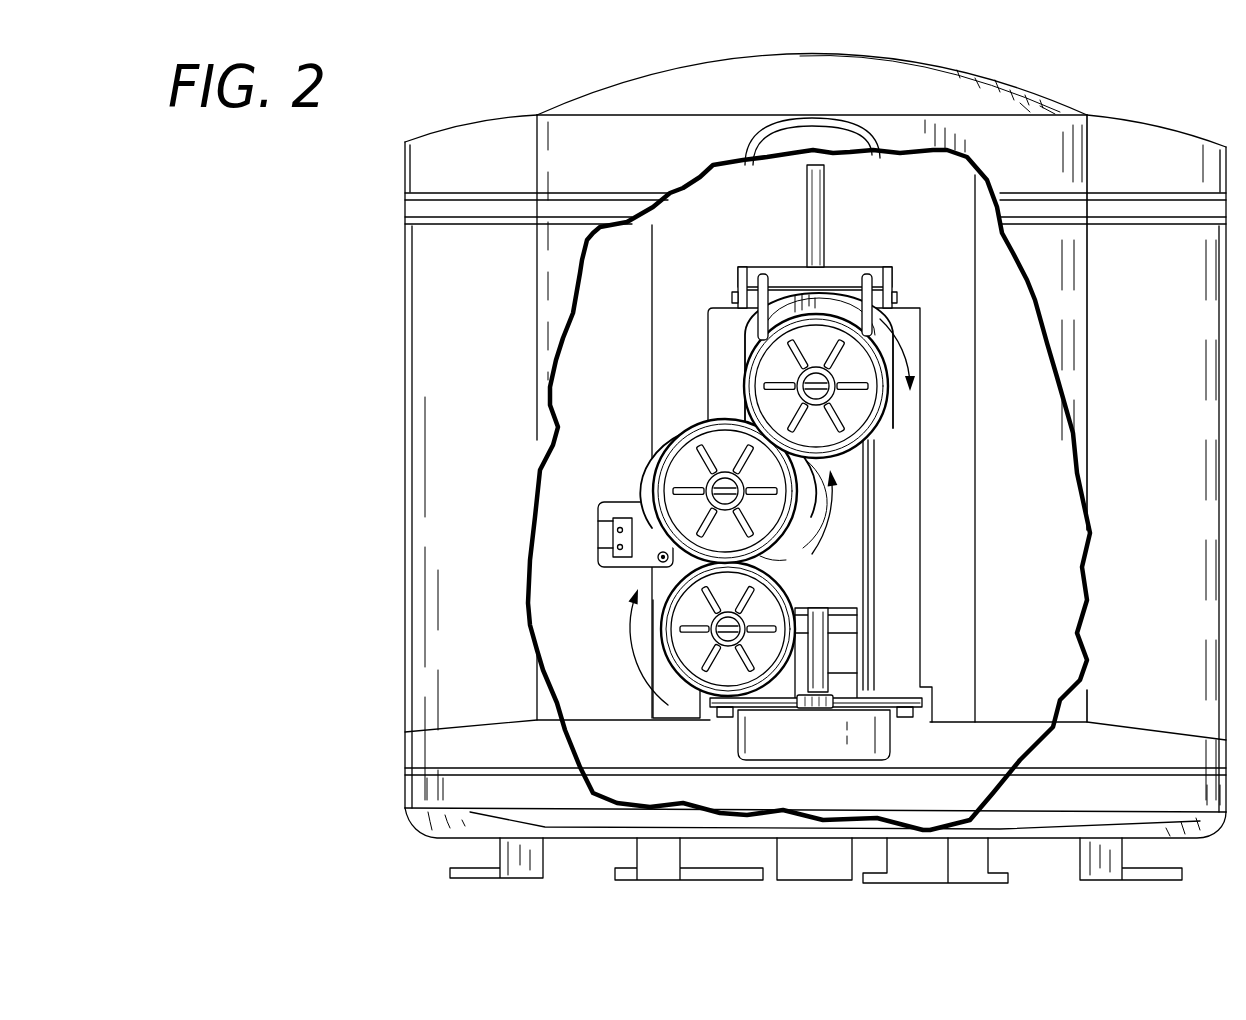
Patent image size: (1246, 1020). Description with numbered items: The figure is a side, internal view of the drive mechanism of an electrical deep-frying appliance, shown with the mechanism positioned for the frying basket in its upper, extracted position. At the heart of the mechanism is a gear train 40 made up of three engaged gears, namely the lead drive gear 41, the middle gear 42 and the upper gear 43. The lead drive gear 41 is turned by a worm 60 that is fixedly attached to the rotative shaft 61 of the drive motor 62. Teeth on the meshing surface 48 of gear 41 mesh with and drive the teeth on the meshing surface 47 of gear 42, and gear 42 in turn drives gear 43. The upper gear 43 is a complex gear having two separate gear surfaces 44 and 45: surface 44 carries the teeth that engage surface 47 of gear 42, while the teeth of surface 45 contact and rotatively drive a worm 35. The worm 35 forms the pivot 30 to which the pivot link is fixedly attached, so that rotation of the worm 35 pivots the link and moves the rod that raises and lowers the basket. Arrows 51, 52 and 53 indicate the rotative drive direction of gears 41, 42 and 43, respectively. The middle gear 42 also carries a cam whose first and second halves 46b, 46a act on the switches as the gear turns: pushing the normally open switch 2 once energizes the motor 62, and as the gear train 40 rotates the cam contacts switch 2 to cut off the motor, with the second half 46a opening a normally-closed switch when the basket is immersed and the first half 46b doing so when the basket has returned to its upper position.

The switch 2 is at (627, 520).
The pivot 30 is at (897, 290).
The worm 35 is at (780, 277).
The gear train 40 is at (1012, 482).
The lead drive gear 41 is at (692, 655).
The middle gear 42 is at (700, 450).
The upper gear 43 is at (847, 350).
The gear surface 44 is at (880, 413).
The gear surface 45 is at (833, 298).
The second half of cam 46a is at (806, 552).
The first half of cam 46b is at (643, 467).
The meshing surface 47 is at (772, 564).
The meshing surface 48 is at (660, 627).
The arrow 51 is at (648, 705).
The arrow 52 is at (838, 500).
The arrow 53 is at (905, 345).
The worm 60 is at (842, 642).
The rotative shaft 61 is at (830, 697).
The drive motor 62 is at (880, 740).